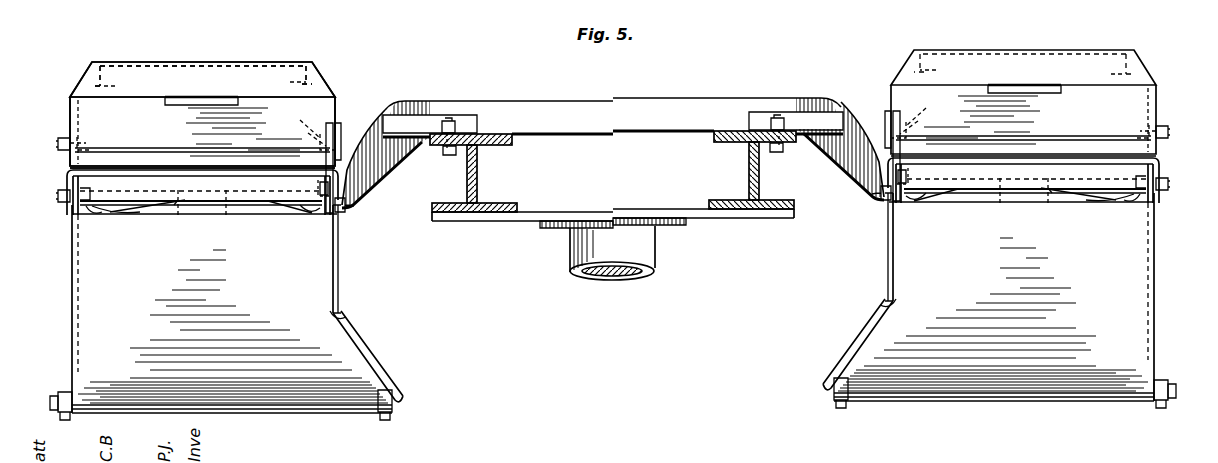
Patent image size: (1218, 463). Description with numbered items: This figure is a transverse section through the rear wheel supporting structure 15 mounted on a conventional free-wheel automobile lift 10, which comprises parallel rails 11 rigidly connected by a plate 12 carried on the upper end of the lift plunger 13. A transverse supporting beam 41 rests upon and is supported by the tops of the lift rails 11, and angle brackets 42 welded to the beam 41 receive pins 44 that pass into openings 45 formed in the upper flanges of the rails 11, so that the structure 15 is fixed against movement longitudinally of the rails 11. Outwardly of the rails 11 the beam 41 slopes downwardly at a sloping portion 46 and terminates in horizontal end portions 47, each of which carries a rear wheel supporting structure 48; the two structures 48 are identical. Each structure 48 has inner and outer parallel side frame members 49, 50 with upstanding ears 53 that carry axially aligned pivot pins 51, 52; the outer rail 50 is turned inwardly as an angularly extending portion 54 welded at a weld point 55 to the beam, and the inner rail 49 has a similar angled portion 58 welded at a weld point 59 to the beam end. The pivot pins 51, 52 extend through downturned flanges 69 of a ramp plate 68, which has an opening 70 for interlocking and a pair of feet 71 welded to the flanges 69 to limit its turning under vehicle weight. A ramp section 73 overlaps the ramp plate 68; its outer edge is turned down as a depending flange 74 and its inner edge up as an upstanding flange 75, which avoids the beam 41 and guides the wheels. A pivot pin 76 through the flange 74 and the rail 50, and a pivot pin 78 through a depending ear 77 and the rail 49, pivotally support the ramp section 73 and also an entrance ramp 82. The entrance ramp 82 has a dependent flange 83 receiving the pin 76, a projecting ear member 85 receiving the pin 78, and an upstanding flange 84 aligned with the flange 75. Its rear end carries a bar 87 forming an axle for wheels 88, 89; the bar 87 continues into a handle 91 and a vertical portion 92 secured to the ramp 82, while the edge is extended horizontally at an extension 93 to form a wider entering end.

The automobile lift 10 is at (745, 222).
The rails 11 is at (434, 206).
The plate 12 is at (482, 223).
The lift plunger 13 is at (568, 258).
The rear wheel supporting structure 15 is at (349, 72).
The transverse supporting beam 41 is at (628, 100).
The angle brackets 42 is at (420, 120).
The pins 44 is at (452, 148).
The openings 45 is at (440, 148).
The sloping portion 46 is at (402, 174).
The horizontal end portions 47 is at (206, 214).
The rear wheel supporting structure 48 is at (265, 56).
The inner side frame member 49 is at (328, 212).
The outer side frame member 50 is at (84, 212).
The pivot pin 51 is at (57, 147).
The pivot pin 52 is at (616, 133).
The upstanding ears 53 is at (84, 130).
The angularly extending portion 54 is at (124, 216).
The weld point 55 is at (176, 214).
The angled portion 58 is at (292, 210).
The weld point 59 is at (616, 213).
The ramp plate 68 is at (606, 126).
The downturned flanges 69 is at (80, 113).
The opening 70 is at (210, 100).
The feet 71 is at (1128, 69).
The ramp section 73 is at (228, 164).
The depending flange 74 is at (66, 180).
The upstanding flange 75 is at (344, 116).
The pivot pin 76 is at (57, 197).
The depending ear 77 is at (342, 150).
The pivot pin 78 is at (348, 212).
The entrance ramp 82 is at (900, 258).
The dependent flange 83 is at (80, 312).
The upstanding flange 84 is at (341, 298).
The projecting ear member 85 is at (320, 178).
The bar 87 is at (50, 402).
The wheel 88 is at (60, 392).
The wheel 89 is at (382, 420).
The handle 91 is at (366, 352).
The vertical portion 92 is at (333, 312).
The horizontal extension 93 is at (360, 386).